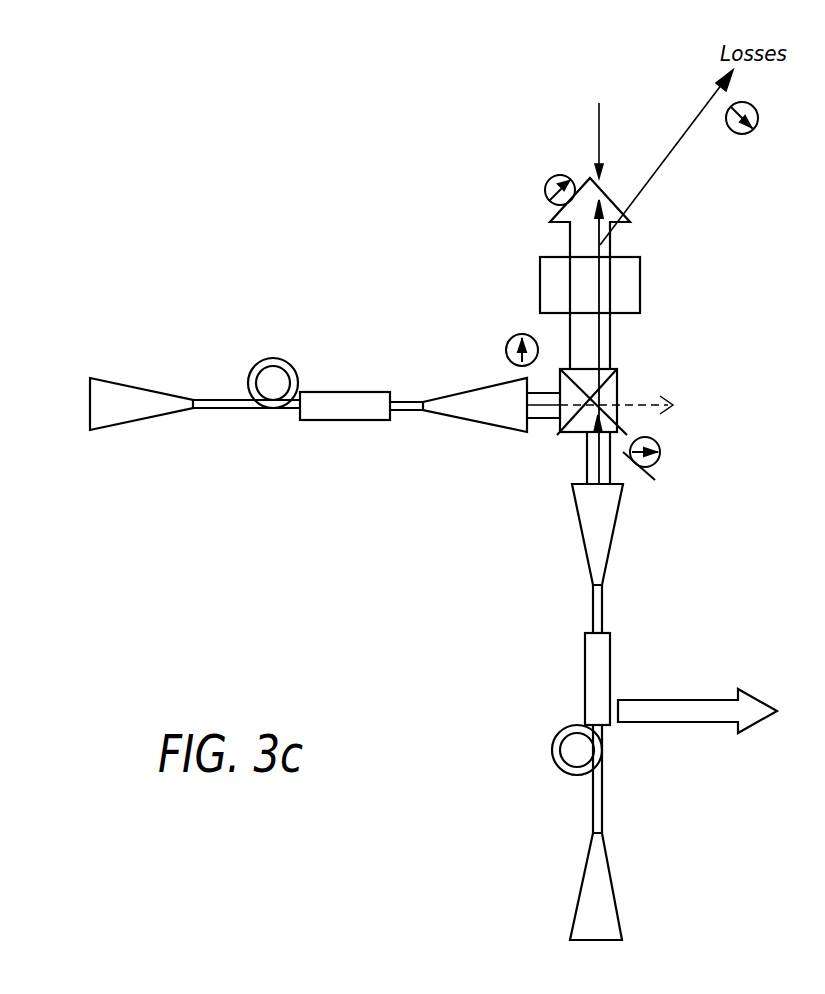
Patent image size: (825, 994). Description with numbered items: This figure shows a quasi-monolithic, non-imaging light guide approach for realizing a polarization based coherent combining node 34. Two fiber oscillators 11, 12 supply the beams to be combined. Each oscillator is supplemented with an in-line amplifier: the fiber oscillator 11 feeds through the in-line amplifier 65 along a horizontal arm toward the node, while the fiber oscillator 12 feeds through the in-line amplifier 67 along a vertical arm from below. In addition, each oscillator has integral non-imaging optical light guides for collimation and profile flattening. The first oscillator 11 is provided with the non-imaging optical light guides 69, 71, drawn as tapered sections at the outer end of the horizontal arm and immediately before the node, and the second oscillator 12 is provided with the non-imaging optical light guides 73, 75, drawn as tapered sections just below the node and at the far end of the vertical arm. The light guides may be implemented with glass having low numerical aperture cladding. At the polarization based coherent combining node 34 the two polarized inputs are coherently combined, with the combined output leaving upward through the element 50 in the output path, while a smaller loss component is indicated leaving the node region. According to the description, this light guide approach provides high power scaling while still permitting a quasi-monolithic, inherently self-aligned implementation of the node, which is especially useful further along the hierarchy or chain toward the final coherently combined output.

The fiber oscillator 11 is at (273, 358).
The fiber oscillator 12 is at (552, 750).
The polarization based coherent combining node 34 is at (617, 382).
The wave plate 50 is at (640, 283).
The in-line amplifier 65 is at (348, 392).
The in-line amplifier 67 is at (610, 663).
The non-imaging optical light guide 69 is at (145, 422).
The non-imaging optical light guide 71 is at (475, 422).
The non-imaging optical light guide 73 is at (613, 533).
The non-imaging optical light guide 75 is at (612, 883).